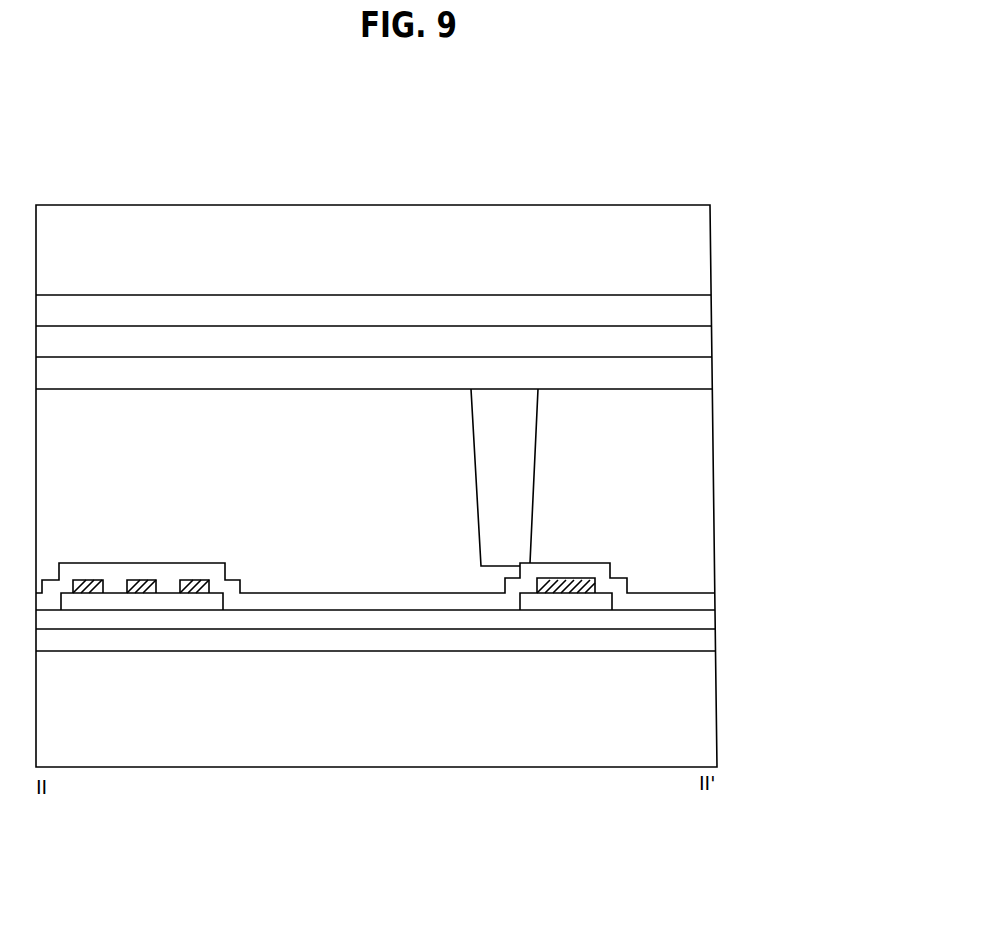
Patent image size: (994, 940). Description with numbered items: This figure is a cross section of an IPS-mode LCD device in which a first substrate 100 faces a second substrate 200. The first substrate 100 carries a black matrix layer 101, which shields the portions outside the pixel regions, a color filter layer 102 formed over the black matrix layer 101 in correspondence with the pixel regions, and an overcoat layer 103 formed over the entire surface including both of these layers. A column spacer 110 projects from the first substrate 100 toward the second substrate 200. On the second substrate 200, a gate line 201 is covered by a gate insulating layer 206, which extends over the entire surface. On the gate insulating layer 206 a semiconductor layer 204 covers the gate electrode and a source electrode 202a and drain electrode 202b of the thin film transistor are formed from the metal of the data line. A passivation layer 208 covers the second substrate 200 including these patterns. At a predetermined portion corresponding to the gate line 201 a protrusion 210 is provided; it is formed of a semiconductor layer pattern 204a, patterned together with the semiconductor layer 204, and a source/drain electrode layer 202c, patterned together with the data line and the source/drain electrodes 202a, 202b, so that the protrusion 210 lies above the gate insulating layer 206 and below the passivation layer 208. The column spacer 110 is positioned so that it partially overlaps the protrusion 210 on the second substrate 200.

The first substrate 100 is at (697, 244).
The black matrix layer 101 is at (700, 305).
The color filter layer 102 is at (700, 336).
The overcoat layer 103 is at (703, 370).
The column spacer 110 is at (530, 476).
The second substrate 200 is at (708, 706).
The gate line 201 is at (705, 636).
The source electrode 202a is at (193, 578).
The drain electrode 202b is at (137, 602).
The source/drain electrode layer 202c is at (575, 588).
The semiconductor layer 204 is at (215, 602).
The semiconductor layer pattern 204a is at (603, 598).
The gate insulating layer 206 is at (705, 615).
The passivation layer 208 is at (705, 594).
The protrusion 210 is at (680, 548).